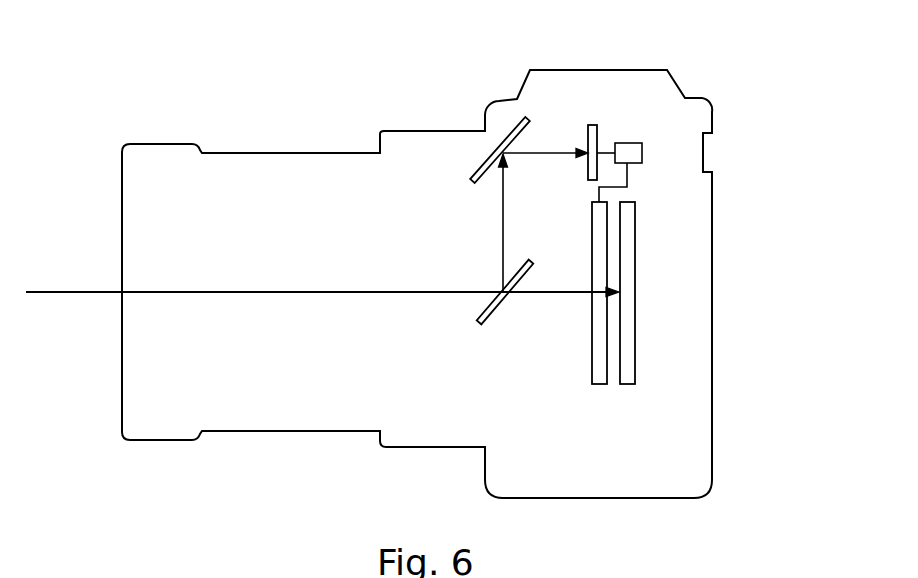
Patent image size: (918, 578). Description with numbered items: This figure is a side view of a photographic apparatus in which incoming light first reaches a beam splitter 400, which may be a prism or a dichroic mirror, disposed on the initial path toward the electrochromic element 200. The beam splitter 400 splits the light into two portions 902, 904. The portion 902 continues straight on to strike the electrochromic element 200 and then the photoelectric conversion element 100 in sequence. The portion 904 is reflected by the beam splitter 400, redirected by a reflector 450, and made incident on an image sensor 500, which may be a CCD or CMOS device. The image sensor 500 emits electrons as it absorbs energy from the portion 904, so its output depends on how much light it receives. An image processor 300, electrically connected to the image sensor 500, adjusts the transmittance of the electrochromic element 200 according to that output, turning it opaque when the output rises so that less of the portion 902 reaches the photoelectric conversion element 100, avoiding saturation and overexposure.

The photoelectric conversion element 100 is at (628, 322).
The electrochromic element 200 is at (598, 363).
The image processor 300 is at (628, 155).
The beam splitter 400 is at (500, 306).
The reflector 450 is at (485, 160).
The image sensor 500 is at (597, 125).
The portion of the light 902 is at (552, 293).
The portion of the light 904 is at (503, 223).